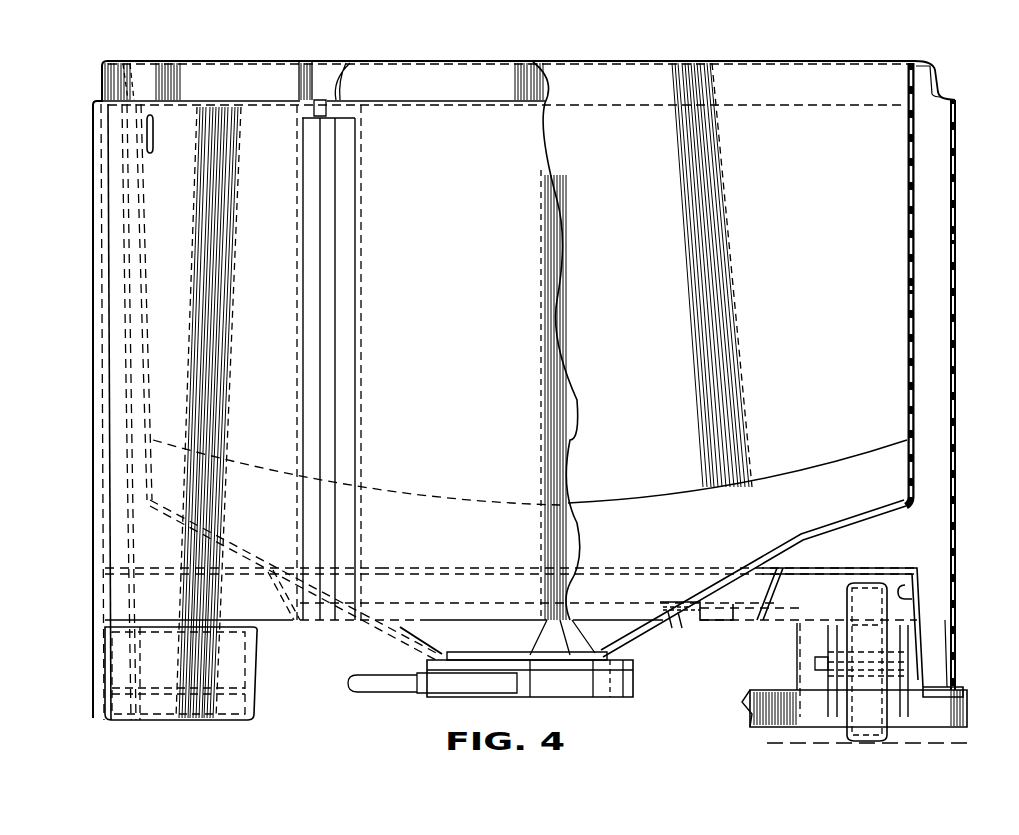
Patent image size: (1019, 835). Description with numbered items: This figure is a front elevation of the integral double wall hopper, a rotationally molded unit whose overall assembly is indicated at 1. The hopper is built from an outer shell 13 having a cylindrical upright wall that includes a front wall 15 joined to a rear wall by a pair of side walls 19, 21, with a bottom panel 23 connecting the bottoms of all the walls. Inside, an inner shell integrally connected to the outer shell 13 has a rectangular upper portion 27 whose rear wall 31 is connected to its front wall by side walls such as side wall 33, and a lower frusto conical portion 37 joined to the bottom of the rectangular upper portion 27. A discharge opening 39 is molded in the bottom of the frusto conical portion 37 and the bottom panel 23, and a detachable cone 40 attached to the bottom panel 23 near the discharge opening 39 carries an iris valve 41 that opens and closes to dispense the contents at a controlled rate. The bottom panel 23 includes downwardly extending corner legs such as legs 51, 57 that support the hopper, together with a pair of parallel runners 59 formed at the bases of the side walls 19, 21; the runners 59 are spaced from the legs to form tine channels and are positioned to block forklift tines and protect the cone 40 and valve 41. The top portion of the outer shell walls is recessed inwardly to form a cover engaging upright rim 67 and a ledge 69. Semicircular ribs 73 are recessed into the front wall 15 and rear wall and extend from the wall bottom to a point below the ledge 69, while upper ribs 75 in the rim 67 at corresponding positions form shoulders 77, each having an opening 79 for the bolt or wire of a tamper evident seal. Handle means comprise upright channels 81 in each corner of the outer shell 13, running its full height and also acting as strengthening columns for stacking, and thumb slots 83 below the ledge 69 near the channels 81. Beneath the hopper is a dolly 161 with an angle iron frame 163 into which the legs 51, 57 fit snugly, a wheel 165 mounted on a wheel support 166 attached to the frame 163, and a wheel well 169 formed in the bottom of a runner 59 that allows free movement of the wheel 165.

The container assembly 1 is at (962, 284).
The outer shell 13 is at (956, 222).
The front wall 15 is at (462, 404).
The side wall 19 is at (957, 372).
The side wall 21 is at (100, 356).
The bottom panel 23 is at (826, 568).
The rectangular upper portion 27 is at (907, 264).
The rear wall 31 is at (782, 299).
The side wall 33 is at (907, 333).
The lower frusto conical portion 37 is at (795, 545).
The discharge opening 39 is at (458, 650).
The detachable cone 40 is at (628, 633).
The iris valve 41 is at (600, 692).
The leg 51 is at (125, 665).
The leg 57 is at (955, 648).
The runner 59 is at (955, 622).
The cover engaging upright rim 67 is at (483, 72).
The ledge 69 is at (432, 101).
The rib 73 is at (336, 310).
The upper rib 75 is at (340, 100).
The shoulder 77 is at (310, 70).
The opening 79 is at (325, 100).
The upright channel 81 is at (108, 166).
The thumb slot 83 is at (153, 136).
The dolly 161 is at (965, 712).
The frame 163 is at (966, 693).
The wheel 165 is at (868, 598).
The wheel support 166 is at (825, 640).
The wheel well 169 is at (912, 592).